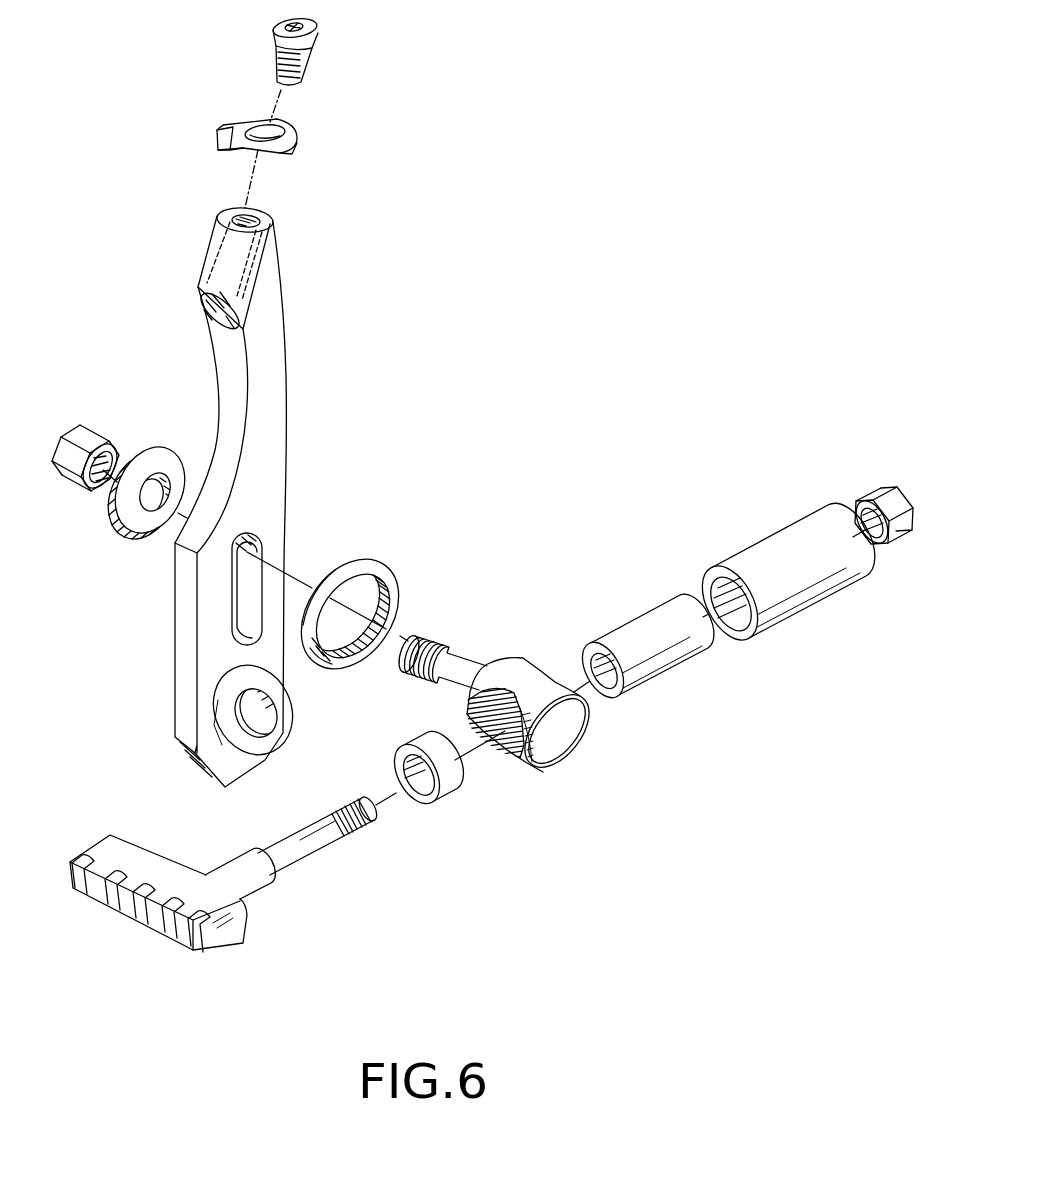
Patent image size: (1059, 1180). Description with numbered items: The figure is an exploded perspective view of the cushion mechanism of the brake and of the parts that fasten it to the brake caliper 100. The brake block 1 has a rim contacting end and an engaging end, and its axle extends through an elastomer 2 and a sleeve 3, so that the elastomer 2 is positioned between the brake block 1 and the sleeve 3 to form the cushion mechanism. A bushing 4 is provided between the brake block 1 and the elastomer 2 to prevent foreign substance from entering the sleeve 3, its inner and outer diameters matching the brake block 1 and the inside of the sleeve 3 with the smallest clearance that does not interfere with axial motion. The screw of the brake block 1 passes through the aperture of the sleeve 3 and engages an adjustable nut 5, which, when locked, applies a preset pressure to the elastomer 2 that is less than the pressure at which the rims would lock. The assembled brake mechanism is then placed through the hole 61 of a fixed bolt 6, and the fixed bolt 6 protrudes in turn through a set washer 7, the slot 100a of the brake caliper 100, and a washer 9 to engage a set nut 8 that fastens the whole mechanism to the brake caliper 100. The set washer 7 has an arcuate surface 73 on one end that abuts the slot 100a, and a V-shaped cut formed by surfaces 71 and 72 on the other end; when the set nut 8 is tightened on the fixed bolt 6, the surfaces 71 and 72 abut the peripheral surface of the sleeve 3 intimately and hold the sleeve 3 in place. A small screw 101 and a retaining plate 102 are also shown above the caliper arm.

The brake block 1 is at (177, 860).
The elastomer 2 is at (633, 630).
The sleeve 3 is at (768, 537).
The bushing 4 is at (400, 753).
The adjustable nut 5 is at (867, 492).
The fixed bolt 6 is at (498, 682).
The hole 61 is at (465, 720).
The set washer 7 is at (384, 640).
The surface 71 is at (392, 574).
The surface 72 is at (398, 602).
The arcuate surface 73 is at (322, 578).
The set nut 8 is at (98, 422).
The washer 9 is at (160, 450).
The brake caliper 100 is at (278, 496).
The slot 100a is at (248, 552).
The screw 101 is at (318, 42).
The retaining plate 102 is at (297, 147).